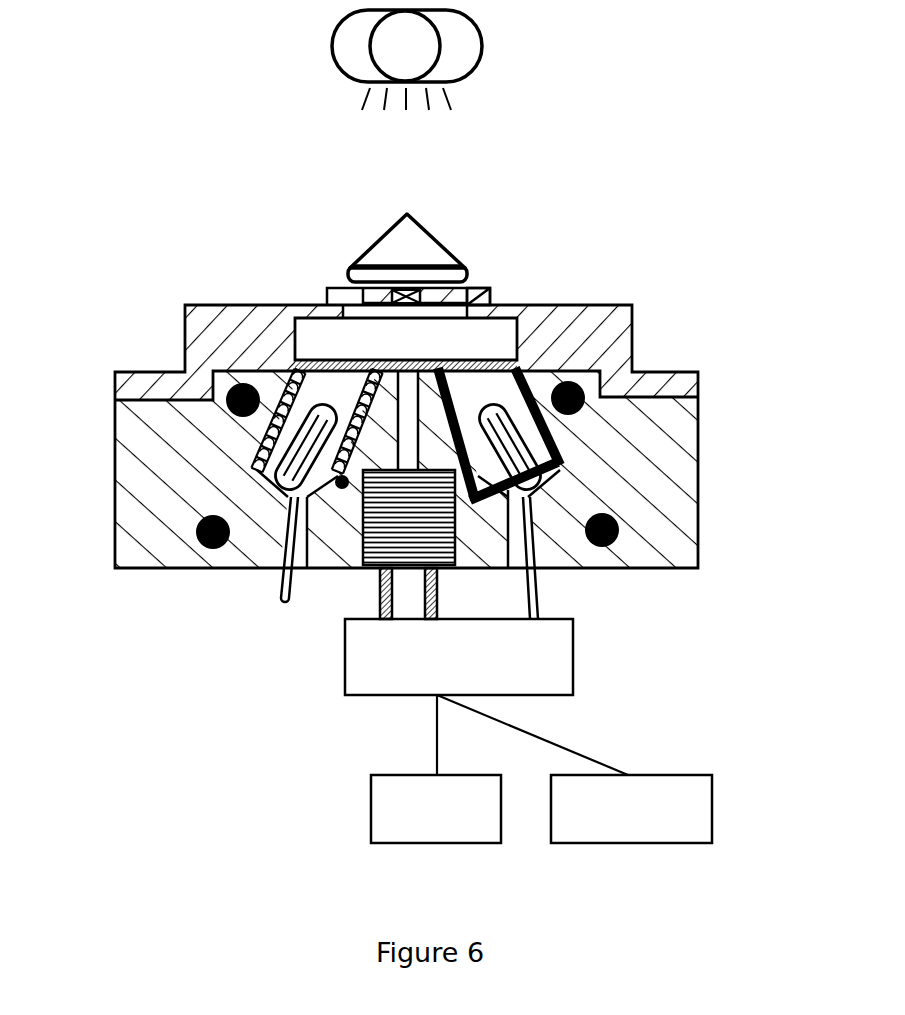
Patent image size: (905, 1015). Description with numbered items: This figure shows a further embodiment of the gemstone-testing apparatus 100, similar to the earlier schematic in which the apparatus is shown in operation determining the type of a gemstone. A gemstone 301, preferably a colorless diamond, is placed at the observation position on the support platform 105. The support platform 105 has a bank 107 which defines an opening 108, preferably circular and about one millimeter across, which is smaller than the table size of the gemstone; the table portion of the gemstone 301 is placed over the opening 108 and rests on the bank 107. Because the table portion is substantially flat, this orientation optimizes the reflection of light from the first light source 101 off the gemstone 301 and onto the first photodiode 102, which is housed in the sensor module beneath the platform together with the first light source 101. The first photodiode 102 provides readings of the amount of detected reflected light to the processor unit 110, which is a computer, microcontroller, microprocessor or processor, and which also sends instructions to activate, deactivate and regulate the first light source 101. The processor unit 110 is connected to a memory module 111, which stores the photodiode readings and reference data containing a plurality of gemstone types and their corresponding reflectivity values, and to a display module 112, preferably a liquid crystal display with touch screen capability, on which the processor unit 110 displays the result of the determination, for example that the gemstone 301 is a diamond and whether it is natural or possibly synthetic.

The apparatus 100 is at (744, 106).
The first light source 101 is at (305, 443).
The first photodiode 102 is at (560, 468).
The support platform 105 is at (340, 287).
The bank 107 is at (492, 290).
The opening 108 is at (425, 297).
The processor unit 110 is at (537, 657).
The memory module 111 is at (406, 808).
The display module 112 is at (698, 804).
The gemstone 301 is at (412, 246).